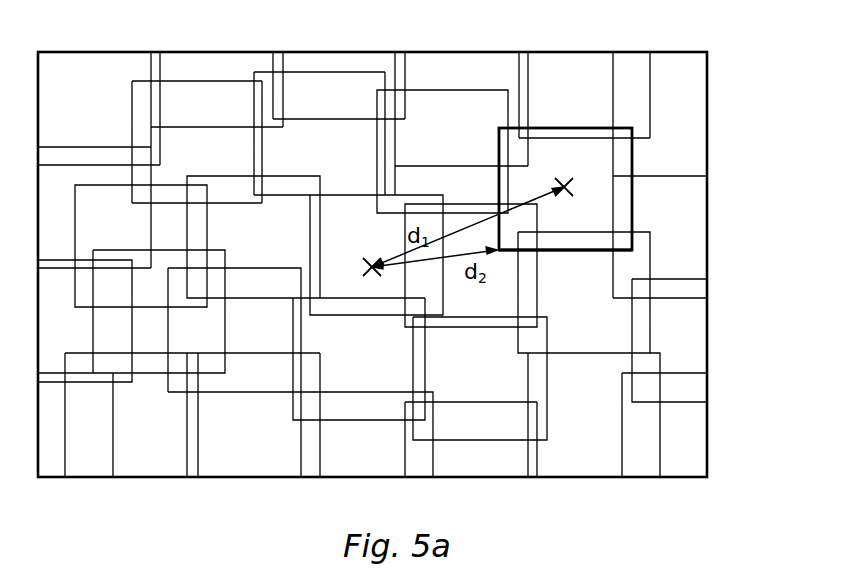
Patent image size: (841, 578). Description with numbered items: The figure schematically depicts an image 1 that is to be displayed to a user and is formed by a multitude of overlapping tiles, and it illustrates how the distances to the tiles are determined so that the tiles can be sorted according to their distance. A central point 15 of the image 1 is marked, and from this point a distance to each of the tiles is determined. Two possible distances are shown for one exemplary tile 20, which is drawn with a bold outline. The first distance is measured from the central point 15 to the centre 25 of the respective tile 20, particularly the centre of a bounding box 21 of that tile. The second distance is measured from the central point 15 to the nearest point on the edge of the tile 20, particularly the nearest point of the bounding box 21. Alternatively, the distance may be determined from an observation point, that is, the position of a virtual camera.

The image 1 is at (188, 492).
The central point 15 is at (372, 267).
The tile 20 is at (570, 143).
The bounding box 21 is at (598, 252).
The centre 25 is at (564, 187).